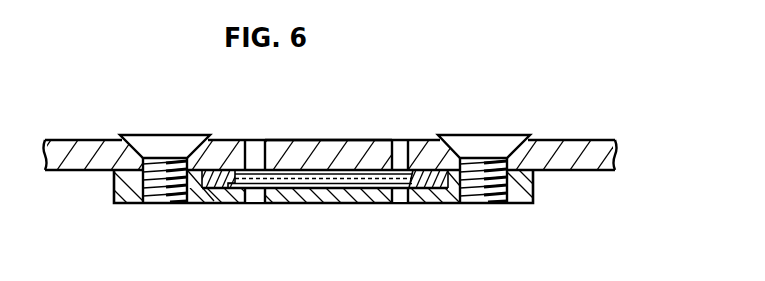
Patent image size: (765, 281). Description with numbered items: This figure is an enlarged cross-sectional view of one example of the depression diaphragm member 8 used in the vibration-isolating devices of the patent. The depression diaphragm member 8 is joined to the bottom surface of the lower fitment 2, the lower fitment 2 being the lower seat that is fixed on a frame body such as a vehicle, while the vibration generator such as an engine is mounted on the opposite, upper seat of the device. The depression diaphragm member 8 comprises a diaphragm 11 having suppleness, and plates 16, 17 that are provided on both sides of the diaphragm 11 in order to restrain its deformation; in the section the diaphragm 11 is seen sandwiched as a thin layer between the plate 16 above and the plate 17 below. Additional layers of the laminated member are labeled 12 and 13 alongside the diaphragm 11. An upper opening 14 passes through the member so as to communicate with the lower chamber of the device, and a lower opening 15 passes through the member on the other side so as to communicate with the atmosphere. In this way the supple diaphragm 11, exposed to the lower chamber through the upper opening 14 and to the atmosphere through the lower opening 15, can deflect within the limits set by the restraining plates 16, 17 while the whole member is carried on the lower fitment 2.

The lower fitment 2 is at (565, 152).
The depression diaphragm member 8 is at (342, 170).
The diaphragm 11 is at (297, 175).
The dielectric layer 12 is at (348, 173).
The lower electrode layer 13 is at (370, 185).
The upper opening 14 is at (258, 147).
The lower opening 15 is at (257, 195).
The plate 16 is at (379, 150).
The plate 17 is at (300, 190).